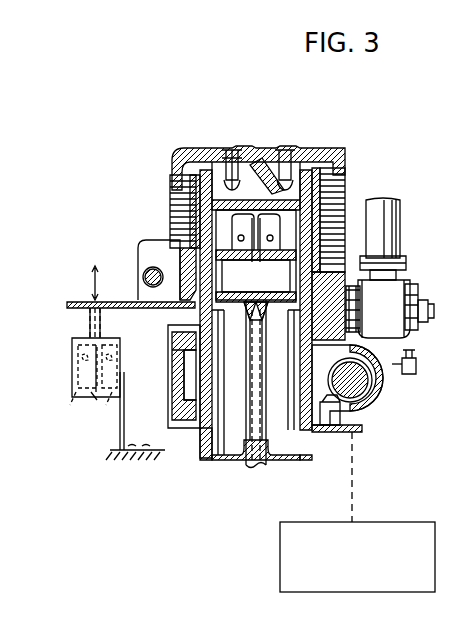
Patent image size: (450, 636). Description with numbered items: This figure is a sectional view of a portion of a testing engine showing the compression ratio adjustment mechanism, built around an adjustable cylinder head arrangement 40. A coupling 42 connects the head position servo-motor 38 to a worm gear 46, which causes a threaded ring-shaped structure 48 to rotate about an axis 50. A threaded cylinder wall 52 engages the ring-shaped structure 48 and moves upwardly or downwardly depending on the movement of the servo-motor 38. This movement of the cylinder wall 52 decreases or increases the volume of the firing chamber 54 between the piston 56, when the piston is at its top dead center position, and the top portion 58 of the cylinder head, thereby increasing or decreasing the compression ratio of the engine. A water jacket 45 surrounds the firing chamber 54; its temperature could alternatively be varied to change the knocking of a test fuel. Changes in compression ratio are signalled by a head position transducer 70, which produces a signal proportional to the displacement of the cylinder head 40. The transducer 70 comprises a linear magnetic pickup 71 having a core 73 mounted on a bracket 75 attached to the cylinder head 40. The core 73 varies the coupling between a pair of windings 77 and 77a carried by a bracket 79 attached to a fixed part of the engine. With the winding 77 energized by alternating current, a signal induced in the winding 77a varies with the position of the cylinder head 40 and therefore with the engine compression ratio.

The head position servo-motor 38 is at (280, 553).
The adjustable cylinder head arrangement 40 is at (328, 154).
The coupling 42 is at (353, 475).
The water jacket 45 is at (342, 172).
The worm gear 46 is at (365, 404).
The threaded ring-shaped structure 48 is at (336, 432).
The axis 50 is at (258, 478).
The threaded cylinder wall 52 is at (202, 450).
The firing chamber 54 is at (261, 185).
The piston 56 is at (192, 207).
The top portion of the cylinder head 58 is at (300, 175).
The head position transducer 70 is at (83, 412).
The linear magnetic pickup 71 is at (118, 366).
The core 73 is at (89, 322).
The bracket 75 is at (84, 302).
The winding 77 is at (73, 382).
The winding 77a is at (101, 382).
The bracket 79 is at (126, 424).